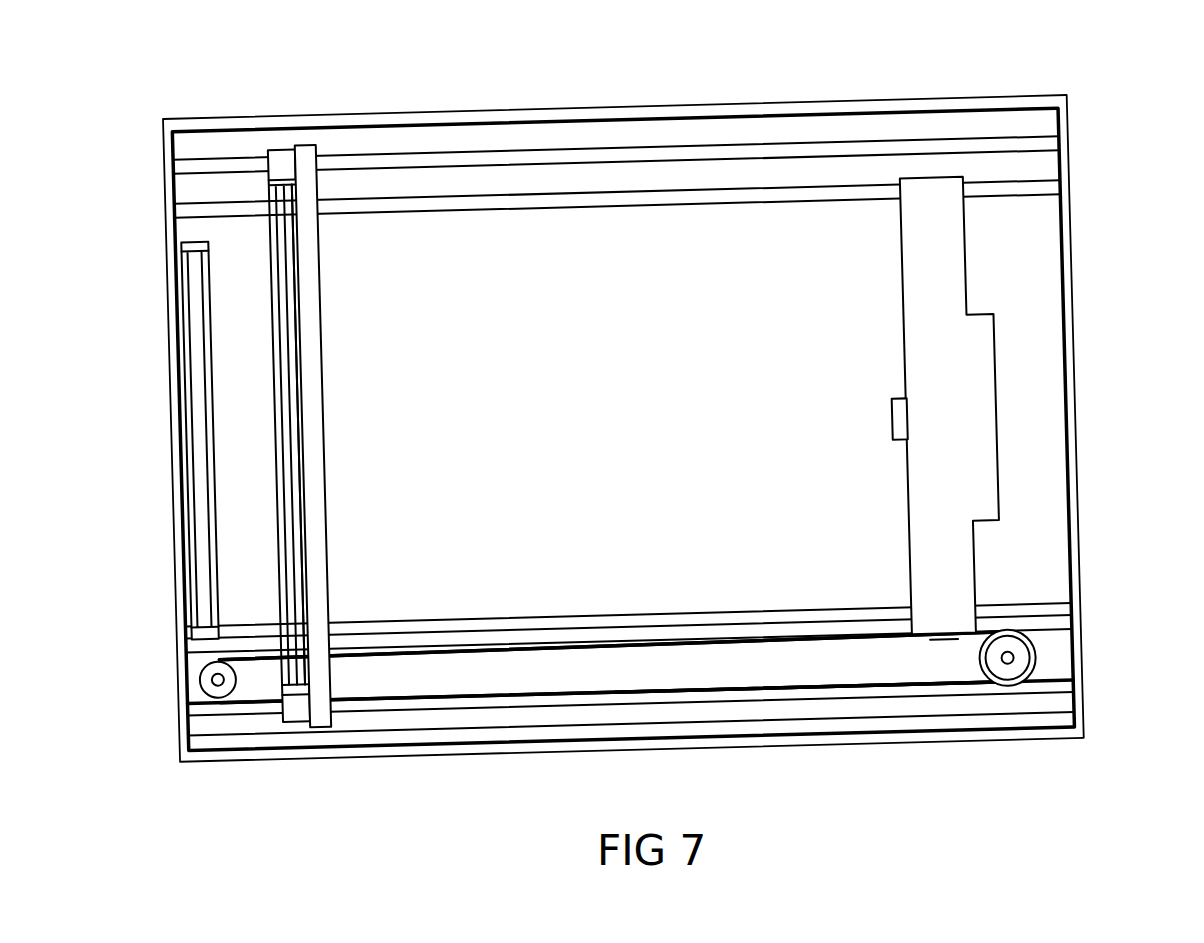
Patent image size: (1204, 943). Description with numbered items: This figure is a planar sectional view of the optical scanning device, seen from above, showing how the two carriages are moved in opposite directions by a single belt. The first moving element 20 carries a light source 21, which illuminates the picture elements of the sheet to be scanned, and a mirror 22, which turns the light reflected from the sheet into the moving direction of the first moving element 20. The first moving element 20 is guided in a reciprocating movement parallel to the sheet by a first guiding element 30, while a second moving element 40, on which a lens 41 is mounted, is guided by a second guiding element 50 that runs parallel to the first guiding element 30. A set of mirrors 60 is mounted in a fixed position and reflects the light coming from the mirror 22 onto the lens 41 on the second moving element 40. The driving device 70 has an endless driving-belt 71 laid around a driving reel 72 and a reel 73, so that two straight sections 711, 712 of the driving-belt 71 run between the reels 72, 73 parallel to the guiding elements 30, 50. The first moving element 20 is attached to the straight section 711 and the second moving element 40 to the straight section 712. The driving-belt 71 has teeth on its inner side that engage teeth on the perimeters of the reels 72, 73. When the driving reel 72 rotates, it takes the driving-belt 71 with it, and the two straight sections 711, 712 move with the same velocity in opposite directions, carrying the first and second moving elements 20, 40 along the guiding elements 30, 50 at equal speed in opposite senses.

The first moving element 20 is at (323, 435).
The light source 21 is at (307, 350).
The mirror 22 is at (282, 295).
The first guiding element 30 is at (660, 155).
The second moving element 40 is at (917, 286).
The lens 41 is at (895, 415).
The second guiding element 50 is at (717, 195).
The set of mirrors 60 is at (197, 385).
The driving device 70 is at (812, 693).
The driving-belt 71 is at (877, 688).
The straight section 711 is at (600, 652).
The straight section 712 is at (523, 692).
The driving reel 72 is at (1010, 658).
The reel 73 is at (215, 680).